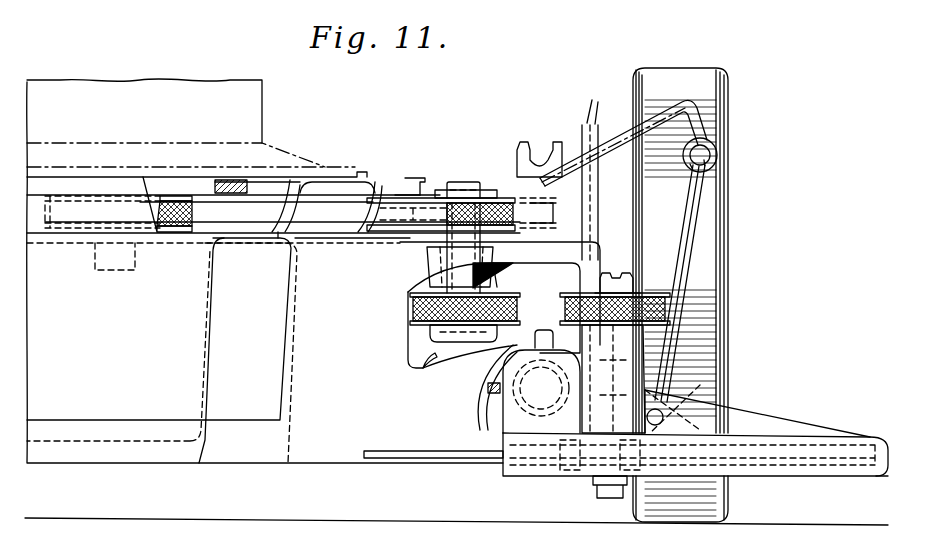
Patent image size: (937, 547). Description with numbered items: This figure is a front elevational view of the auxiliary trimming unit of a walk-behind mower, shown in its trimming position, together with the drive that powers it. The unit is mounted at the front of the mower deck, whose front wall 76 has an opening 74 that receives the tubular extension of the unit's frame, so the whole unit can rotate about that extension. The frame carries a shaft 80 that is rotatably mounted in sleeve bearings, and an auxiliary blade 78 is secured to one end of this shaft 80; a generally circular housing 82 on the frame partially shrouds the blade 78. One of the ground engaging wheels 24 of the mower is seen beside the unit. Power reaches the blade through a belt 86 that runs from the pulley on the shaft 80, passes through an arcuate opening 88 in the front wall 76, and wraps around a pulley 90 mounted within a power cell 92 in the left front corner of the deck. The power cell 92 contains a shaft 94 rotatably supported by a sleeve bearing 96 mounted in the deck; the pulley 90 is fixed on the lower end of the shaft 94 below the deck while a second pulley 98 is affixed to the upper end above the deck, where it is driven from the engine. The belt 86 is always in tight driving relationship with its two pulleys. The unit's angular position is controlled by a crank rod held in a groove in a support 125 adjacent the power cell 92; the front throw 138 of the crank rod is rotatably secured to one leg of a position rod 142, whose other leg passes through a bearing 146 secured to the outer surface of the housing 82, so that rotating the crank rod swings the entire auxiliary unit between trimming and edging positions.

The ground engaging wheel 24 is at (726, 78).
The opening 74 is at (545, 440).
The front wall 76 is at (355, 388).
The auxiliary blade 78 is at (408, 450).
The shaft 80 is at (618, 272).
The circular housing 82 is at (862, 440).
The belt 86 is at (550, 282).
The arcuate opening 88 is at (437, 357).
The pulley 90 is at (408, 338).
The power cell 92 is at (487, 138).
The shaft 94 is at (460, 182).
The sleeve bearing 96 is at (410, 286).
The second pulley 98 is at (428, 198).
The support 125 is at (522, 156).
The front throw 138 is at (613, 128).
The position rod 142 is at (688, 262).
The bearing 146 is at (718, 383).